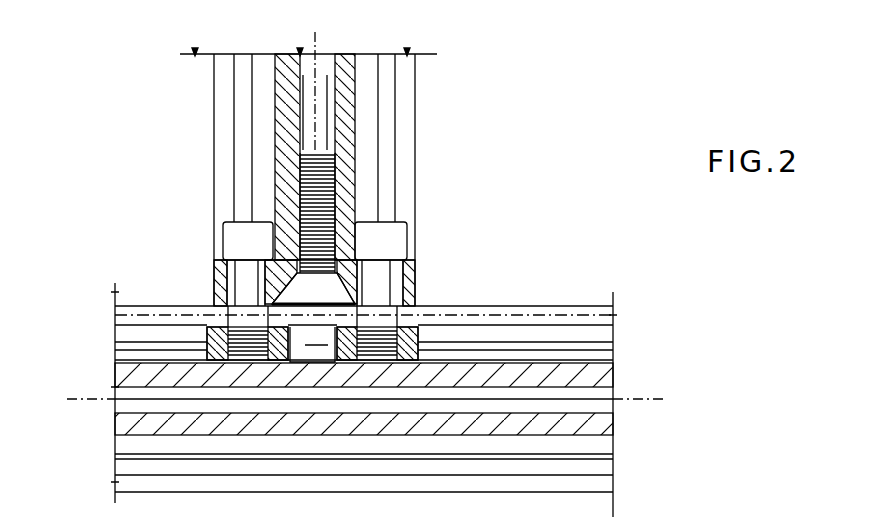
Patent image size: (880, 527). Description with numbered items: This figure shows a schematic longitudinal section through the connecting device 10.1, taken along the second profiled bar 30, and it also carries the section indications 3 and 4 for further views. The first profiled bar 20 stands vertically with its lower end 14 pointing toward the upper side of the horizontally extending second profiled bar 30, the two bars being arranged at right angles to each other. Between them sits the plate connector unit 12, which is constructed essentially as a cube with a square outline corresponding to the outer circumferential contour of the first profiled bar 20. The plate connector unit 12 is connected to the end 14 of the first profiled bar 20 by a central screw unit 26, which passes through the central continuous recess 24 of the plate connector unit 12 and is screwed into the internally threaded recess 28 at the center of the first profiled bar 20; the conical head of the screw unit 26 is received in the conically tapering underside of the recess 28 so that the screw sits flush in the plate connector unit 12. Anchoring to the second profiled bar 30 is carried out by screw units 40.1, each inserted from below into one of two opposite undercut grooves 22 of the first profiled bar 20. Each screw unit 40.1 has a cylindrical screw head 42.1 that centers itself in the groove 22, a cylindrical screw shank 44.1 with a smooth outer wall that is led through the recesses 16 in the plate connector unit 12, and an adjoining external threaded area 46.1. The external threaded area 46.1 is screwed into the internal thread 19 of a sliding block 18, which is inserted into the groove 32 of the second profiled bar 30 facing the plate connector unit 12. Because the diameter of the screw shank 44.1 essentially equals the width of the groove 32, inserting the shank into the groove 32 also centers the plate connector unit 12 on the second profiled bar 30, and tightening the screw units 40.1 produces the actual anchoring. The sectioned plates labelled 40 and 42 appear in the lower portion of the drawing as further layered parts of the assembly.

The connecting device 10.1 is at (520, 259).
The plate connector unit 12 is at (410, 277).
The lower end 14 is at (412, 262).
The recesses 16 is at (405, 270).
The sliding block 18 is at (400, 322).
The internal thread 19 is at (613, 350).
The first profiled bar 20 is at (416, 132).
The groove 22 is at (387, 65).
The central recess 24 is at (215, 277).
The screw unit 26 is at (335, 205).
The recess 28 is at (337, 183).
The second profiled bar 30 is at (613, 422).
The groove 32 is at (580, 451).
The bolt head 40 is at (300, 322).
The screw unit 40.1 is at (418, 237).
The seat 42 is at (433, 523).
The screw head 42.1 is at (417, 202).
The screw shank 44.1 is at (300, 330).
The external threaded area 46.1 is at (365, 307).
The section line 3- 3 is at (501, 190).
The section line 4- 4 is at (665, 315).